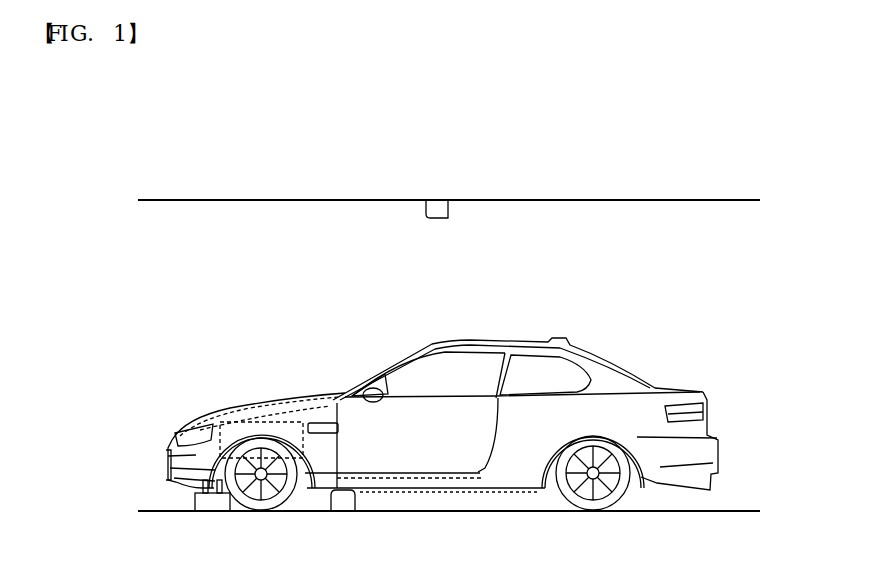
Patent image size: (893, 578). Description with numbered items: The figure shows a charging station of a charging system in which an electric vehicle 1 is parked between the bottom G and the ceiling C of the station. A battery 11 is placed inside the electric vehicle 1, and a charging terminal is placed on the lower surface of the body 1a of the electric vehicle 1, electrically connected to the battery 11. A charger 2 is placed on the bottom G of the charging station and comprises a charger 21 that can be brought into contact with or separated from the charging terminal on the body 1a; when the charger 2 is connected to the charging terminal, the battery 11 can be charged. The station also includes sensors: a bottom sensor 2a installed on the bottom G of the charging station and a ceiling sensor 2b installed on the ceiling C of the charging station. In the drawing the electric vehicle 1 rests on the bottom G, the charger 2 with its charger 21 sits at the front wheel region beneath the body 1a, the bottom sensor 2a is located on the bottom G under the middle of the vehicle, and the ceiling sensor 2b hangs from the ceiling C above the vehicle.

The electric vehicle 1 is at (418, 419).
The body 1a is at (392, 493).
The charger 2 is at (210, 505).
The bottom sensor 2a is at (341, 500).
The ceiling sensor 2b is at (434, 203).
The battery 11 is at (283, 420).
The charger 21 is at (167, 468).
The ceiling C is at (458, 199).
The bottom G is at (497, 513).